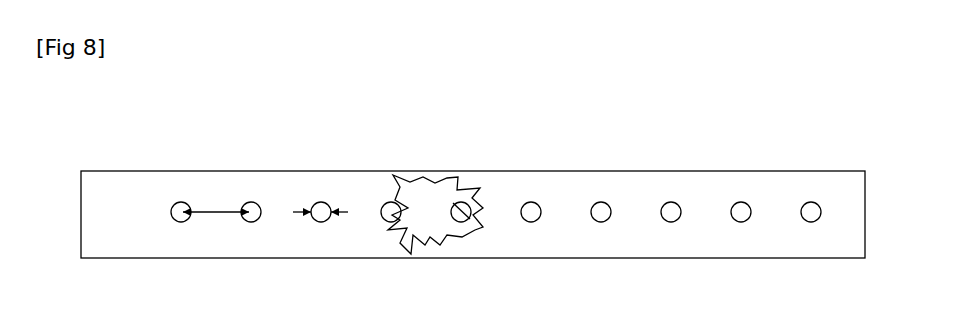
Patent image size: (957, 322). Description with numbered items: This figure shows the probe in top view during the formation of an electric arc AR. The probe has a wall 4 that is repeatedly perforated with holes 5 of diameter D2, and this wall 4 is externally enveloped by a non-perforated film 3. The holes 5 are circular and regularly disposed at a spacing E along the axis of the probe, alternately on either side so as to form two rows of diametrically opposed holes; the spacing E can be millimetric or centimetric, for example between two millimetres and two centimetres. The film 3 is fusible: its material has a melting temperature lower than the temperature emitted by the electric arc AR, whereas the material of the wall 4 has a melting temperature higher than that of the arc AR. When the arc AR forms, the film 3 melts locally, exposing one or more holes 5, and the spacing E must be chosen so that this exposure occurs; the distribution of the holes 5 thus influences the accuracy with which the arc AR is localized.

The film 3 is at (560, 197).
The wall 4 is at (417, 237).
The hole 5 is at (468, 221).
The electric arc AR is at (428, 198).
The spacing E is at (216, 198).
The diameter D2 is at (320, 194).